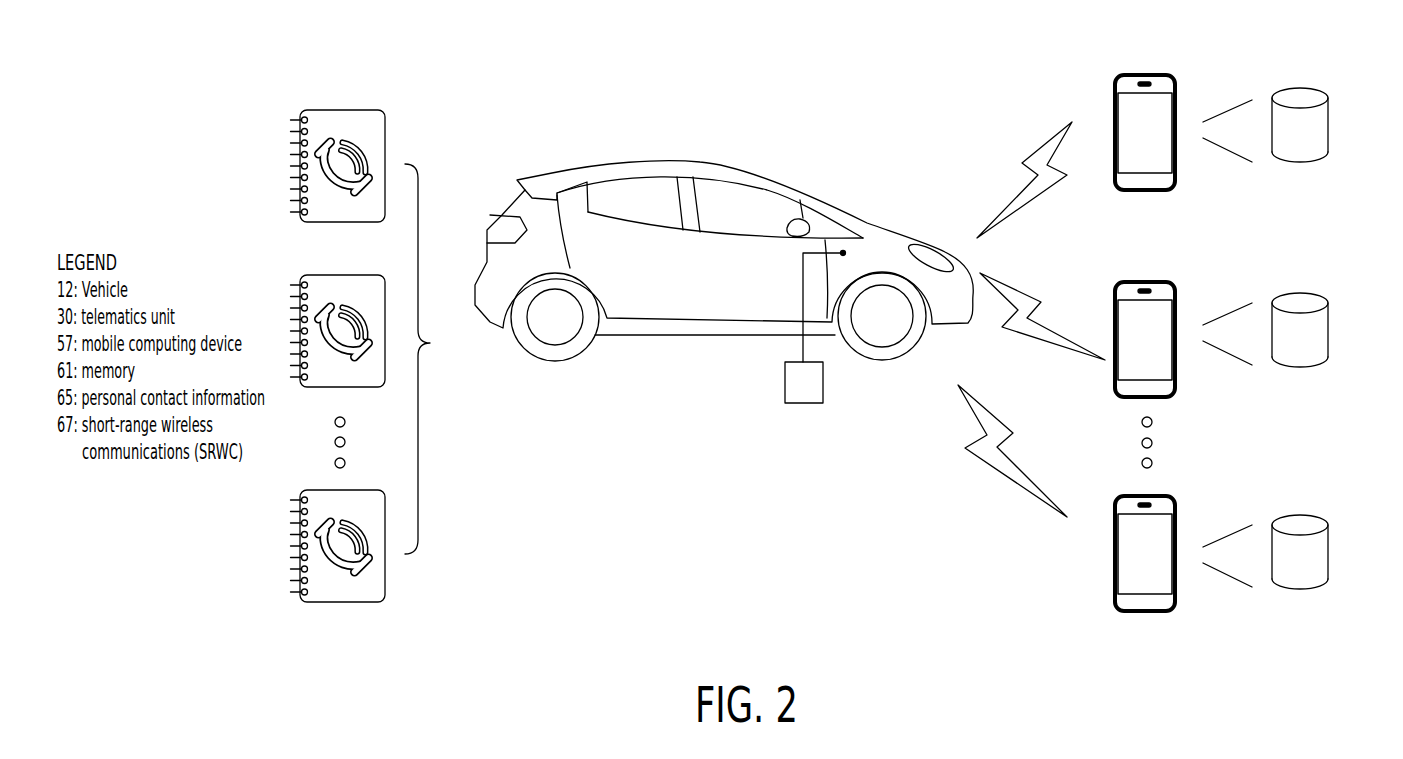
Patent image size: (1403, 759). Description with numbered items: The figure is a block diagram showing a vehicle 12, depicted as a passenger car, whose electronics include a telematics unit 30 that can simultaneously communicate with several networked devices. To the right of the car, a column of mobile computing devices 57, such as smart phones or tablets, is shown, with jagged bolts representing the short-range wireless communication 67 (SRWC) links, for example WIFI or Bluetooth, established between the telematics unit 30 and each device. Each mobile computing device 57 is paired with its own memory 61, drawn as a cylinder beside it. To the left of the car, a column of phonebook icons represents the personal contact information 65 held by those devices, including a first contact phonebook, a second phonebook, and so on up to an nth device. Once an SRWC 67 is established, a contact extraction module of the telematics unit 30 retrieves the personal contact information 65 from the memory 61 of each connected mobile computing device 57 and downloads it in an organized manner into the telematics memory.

The vehicle 12 is at (717, 165).
The telematics unit 30 is at (823, 380).
The mobile computing device 57 is at (1147, 72).
The memory 61 is at (1328, 125).
The personal contact information 65 is at (351, 109).
The short-range wireless communication (SRWC) 67 is at (1032, 165).